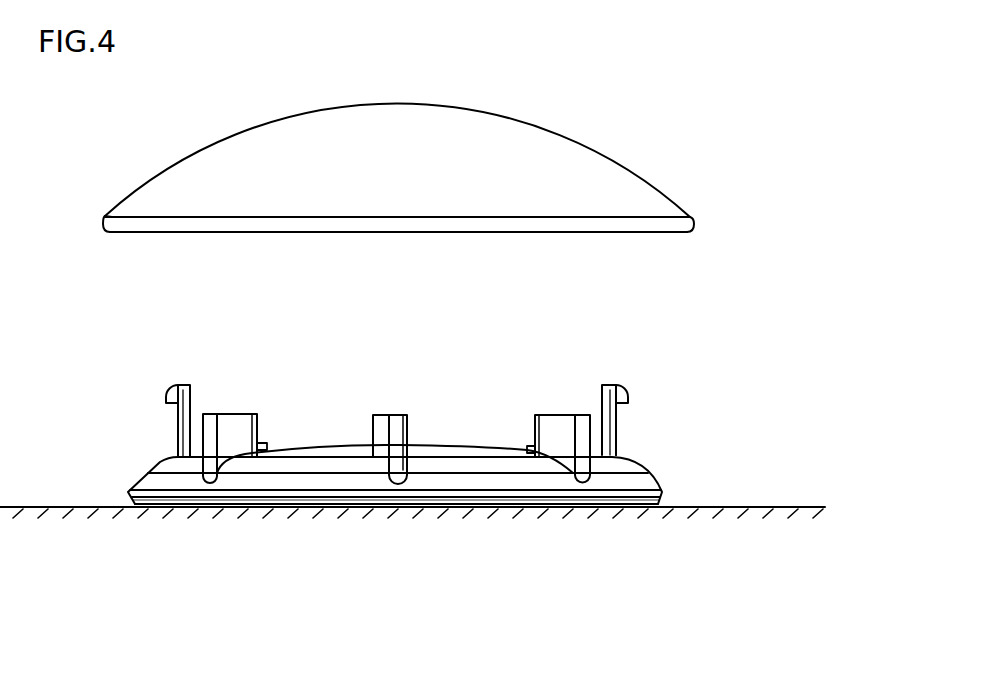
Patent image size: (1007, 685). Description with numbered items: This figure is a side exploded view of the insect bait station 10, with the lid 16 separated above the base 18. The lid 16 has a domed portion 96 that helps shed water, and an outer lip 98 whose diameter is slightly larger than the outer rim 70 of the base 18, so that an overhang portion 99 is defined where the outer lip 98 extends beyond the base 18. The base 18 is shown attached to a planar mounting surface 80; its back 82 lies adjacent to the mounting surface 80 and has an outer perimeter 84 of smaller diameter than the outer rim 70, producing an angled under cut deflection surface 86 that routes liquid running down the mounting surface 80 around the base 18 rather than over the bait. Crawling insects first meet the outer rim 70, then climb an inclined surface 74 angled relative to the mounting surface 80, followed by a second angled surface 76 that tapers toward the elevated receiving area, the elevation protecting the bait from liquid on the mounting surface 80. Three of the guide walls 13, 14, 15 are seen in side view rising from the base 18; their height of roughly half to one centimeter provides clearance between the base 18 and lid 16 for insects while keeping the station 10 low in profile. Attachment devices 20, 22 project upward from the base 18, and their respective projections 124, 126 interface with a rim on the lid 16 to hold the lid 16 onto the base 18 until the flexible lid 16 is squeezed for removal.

The station 10 is at (724, 255).
The lid 16 is at (593, 149).
The domed portion 96 is at (521, 121).
The outer lip 98 is at (693, 223).
The overhang portion 99 is at (104, 218).
The base 18 is at (650, 476).
The second angled surface 76 is at (488, 466).
The inclined surface 74 is at (560, 482).
The outer rim 70 is at (662, 492).
The back 82 is at (635, 510).
The outer perimeter 84 is at (652, 508).
The under cut deflection surface 86 is at (655, 507).
The guide wall 13 is at (239, 414).
The guide wall 14 is at (390, 415).
The guide wall 15 is at (563, 415).
The attachment device 22 is at (170, 390).
The projection 126 is at (166, 402).
The attachment device 20 is at (625, 391).
The projection 124 is at (630, 407).
The planar mounting surface 80 is at (765, 507).